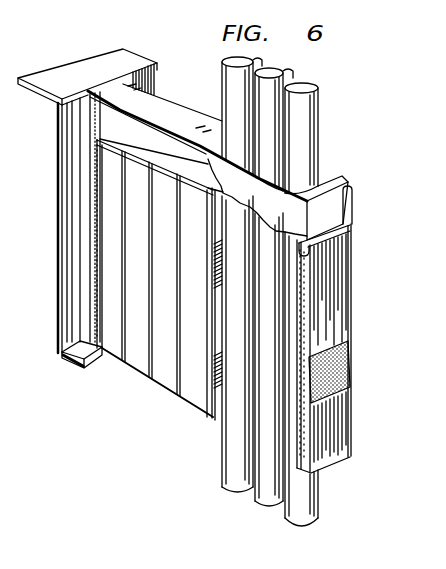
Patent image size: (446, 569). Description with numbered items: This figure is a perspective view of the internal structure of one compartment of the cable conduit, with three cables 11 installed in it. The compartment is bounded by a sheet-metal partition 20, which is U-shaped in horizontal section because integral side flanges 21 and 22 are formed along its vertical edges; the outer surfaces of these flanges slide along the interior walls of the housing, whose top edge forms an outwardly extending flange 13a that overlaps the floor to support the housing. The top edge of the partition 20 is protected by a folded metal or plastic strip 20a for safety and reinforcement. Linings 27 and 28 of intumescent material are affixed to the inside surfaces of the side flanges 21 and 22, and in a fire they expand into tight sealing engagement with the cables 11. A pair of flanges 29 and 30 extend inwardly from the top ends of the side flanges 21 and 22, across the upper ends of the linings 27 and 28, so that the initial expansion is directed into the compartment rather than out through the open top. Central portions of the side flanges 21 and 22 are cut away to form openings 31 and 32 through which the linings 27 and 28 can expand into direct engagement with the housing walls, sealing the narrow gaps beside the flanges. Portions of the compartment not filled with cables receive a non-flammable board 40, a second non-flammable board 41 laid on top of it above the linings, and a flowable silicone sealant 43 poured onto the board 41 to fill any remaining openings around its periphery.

The cables 11 is at (325, 118).
The flange 13a is at (92, 78).
The partition 20 is at (358, 272).
The folded strip 20a is at (336, 182).
The side flange 21 is at (338, 260).
The side flange 22 is at (93, 193).
The intumescent lining 27 is at (300, 437).
The intumescent lining 28 is at (104, 306).
The flange 29 is at (310, 255).
The flange 30 is at (100, 143).
The opening 31 is at (343, 372).
The opening 32 is at (93, 252).
The non-flammable board 40 is at (153, 379).
The non-flammable board 41 is at (100, 122).
The sealant 43 is at (184, 130).